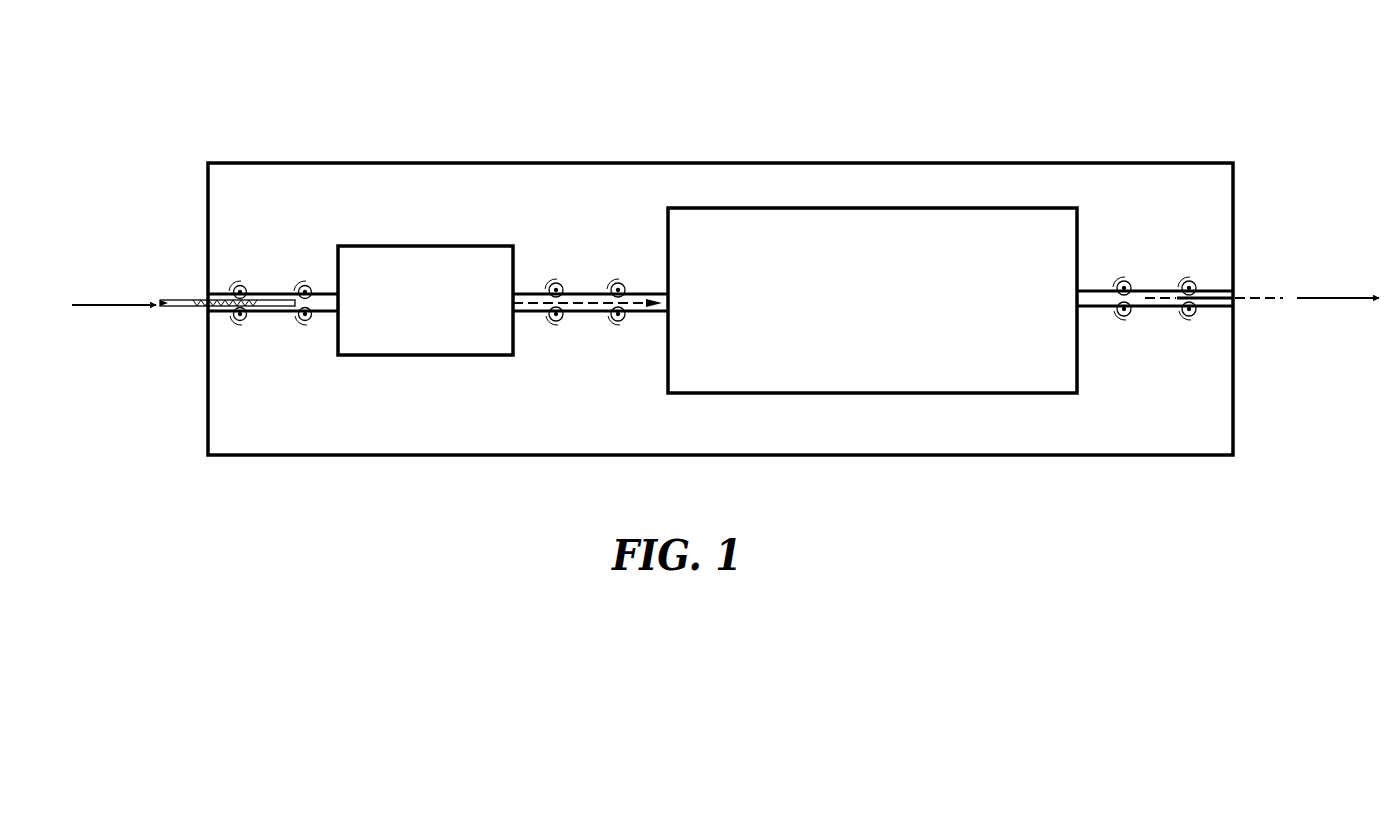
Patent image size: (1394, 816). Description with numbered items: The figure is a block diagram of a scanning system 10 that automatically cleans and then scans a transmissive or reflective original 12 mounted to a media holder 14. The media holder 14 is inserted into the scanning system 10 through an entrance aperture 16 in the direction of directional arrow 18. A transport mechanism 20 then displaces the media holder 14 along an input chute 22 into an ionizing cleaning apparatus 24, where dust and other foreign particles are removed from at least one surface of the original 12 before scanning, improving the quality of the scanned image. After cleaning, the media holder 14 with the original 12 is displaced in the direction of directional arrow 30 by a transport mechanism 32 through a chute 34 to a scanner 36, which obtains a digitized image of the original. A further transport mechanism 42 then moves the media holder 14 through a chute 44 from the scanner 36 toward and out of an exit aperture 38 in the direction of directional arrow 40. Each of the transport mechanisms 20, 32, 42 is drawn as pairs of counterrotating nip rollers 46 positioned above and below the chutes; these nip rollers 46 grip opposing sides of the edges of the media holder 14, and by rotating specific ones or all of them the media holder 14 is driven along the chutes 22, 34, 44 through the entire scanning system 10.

The scanning system 10 is at (288, 103).
The original 12 is at (201, 308).
The media holder 14 is at (160, 301).
The entrance aperture 16 is at (208, 299).
The directional arrow 18 is at (122, 305).
The transport mechanism 20 is at (273, 275).
The input chute 22 is at (328, 313).
The ionizing cleaning apparatus 24 is at (430, 357).
The directional arrow 30 is at (638, 291).
The transport mechanism 32 is at (590, 278).
The chute 34 is at (664, 312).
The scanner 36 is at (860, 395).
The exit aperture 38 is at (1234, 295).
The directional arrow 40 is at (1313, 299).
The transport mechanism 42 is at (1155, 279).
The chute 44 is at (1085, 308).
The nip rollers 46 is at (246, 285).